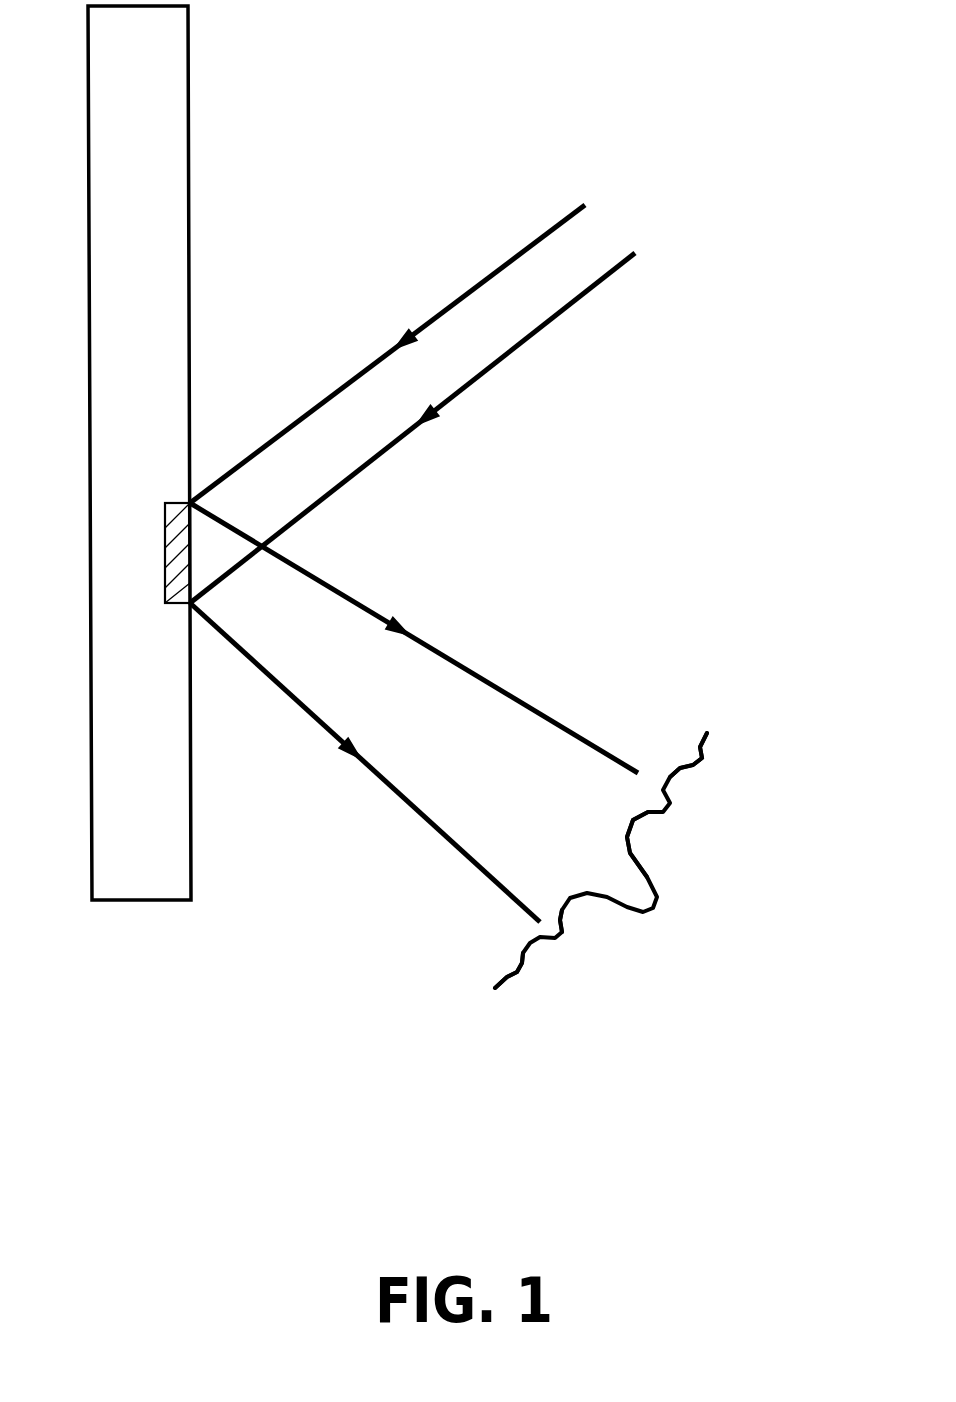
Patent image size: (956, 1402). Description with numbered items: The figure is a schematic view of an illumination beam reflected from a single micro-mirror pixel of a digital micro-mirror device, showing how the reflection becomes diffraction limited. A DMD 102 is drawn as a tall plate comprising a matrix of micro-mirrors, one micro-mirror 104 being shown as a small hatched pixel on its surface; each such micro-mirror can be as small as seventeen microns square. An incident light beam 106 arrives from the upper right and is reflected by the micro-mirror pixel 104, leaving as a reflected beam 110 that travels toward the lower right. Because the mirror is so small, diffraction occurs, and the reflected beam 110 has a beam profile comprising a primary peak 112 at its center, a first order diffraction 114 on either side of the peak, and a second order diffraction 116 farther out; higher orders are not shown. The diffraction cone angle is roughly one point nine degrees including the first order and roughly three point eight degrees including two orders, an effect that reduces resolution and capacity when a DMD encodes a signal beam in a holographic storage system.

The DMD 102 is at (188, 206).
The micro-mirror 104 is at (168, 504).
The incident light beam 106 is at (505, 353).
The reflected beam 110 is at (438, 648).
The primary peak 112 is at (652, 880).
The first order diffraction 114 is at (660, 813).
The second order diffraction 116 is at (690, 765).